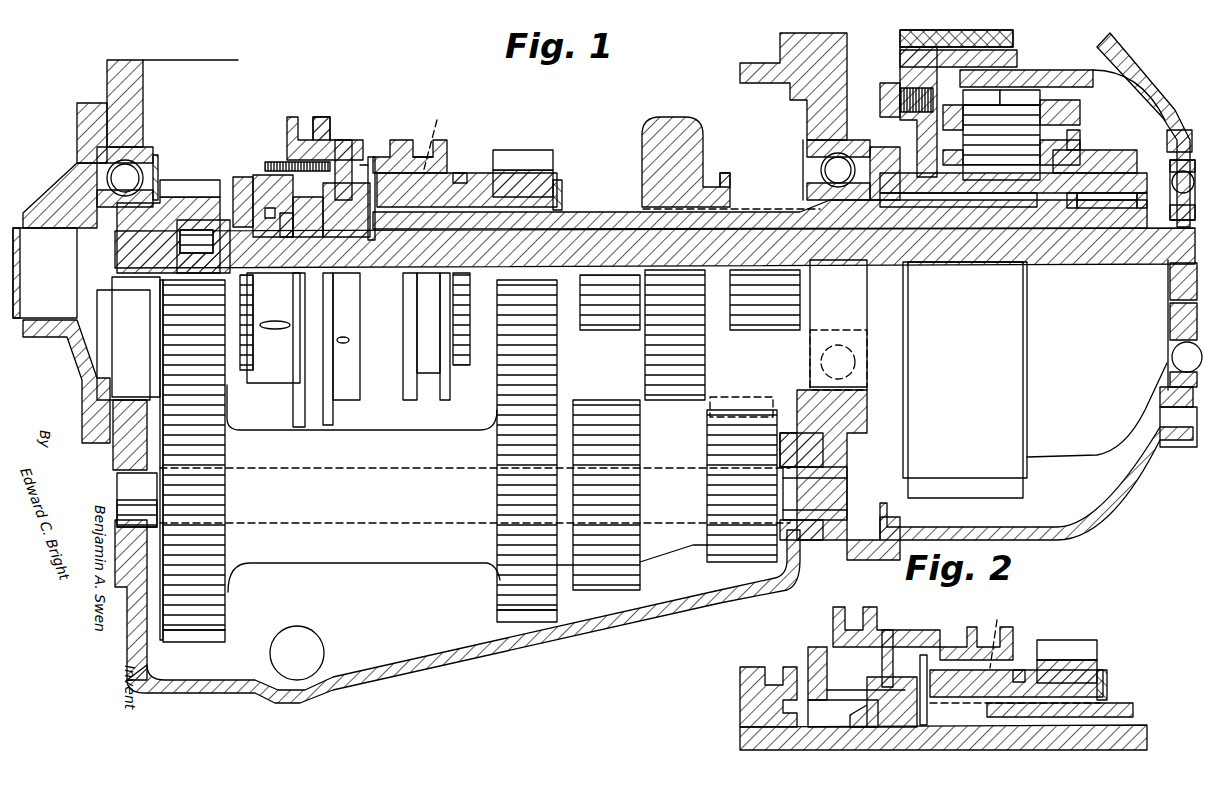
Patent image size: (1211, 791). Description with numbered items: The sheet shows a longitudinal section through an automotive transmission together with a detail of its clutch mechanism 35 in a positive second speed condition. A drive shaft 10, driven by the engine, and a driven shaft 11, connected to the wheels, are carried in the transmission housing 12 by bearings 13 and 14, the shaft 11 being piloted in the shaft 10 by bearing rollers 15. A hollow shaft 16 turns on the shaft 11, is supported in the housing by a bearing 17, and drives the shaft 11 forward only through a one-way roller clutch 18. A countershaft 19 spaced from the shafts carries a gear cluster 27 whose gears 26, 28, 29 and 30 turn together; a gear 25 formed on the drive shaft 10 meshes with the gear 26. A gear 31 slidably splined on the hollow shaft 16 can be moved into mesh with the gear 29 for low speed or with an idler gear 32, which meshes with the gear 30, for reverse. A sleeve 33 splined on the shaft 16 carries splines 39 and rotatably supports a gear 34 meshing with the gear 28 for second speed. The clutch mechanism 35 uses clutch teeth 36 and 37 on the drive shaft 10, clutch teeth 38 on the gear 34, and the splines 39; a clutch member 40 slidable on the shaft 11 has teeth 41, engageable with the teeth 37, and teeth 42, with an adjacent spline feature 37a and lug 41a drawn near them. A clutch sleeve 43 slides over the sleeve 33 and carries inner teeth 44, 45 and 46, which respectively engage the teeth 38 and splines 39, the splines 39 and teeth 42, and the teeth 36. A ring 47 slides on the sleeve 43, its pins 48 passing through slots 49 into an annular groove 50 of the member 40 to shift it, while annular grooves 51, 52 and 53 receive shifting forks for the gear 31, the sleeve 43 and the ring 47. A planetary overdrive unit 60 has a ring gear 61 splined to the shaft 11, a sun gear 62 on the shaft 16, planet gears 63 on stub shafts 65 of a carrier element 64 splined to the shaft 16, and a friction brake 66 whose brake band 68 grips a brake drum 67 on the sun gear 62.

In FIG. 1, the drive shaft 10 is at (62, 255).
In FIG. 2, the drive shaft 10 is at (745, 697).
In FIG. 1, the driven shaft 11 is at (1170, 275).
In FIG. 2, the driven shaft 11 is at (1147, 740).
In FIG. 1, the transmission housing 12 is at (143, 78).
In FIG. 1, the bearing 13 is at (150, 150).
In FIG. 1, the bearing 14 is at (1180, 130).
In FIG. 1, the bearing rollers 15 is at (205, 222).
In FIG. 1, the hollow shaft 16 is at (610, 220).
In FIG. 2, the hollow shaft 16 is at (1133, 710).
In FIG. 1, the bearing 17 is at (820, 170).
In FIG. 1, the one-way clutch 18 is at (1100, 210).
In FIG. 1, the countershaft 19 is at (825, 500).
In FIG. 1, the gear 25 is at (175, 200).
In FIG. 2, the gear 25 is at (758, 672).
In FIG. 1, the gear 26 is at (225, 603).
In FIG. 1, the gear cluster 27 is at (392, 575).
In FIG. 1, the gear 28 is at (525, 620).
In FIG. 1, the gear 29 is at (605, 588).
In FIG. 1, the gear 30 is at (728, 558).
In FIG. 1, the gear 31 is at (683, 120).
In FIG. 1, the idler gear 32 is at (760, 397).
In FIG. 1, the sleeve 33 is at (557, 197).
In FIG. 2, the sleeve 33 is at (1108, 688).
In FIG. 1, the gear 34 is at (550, 150).
In FIG. 2, the gear 34 is at (1080, 645).
In FIG. 1, the clutch mechanism 35 is at (343, 120).
In FIG. 2, the clutch mechanism 35 is at (952, 630).
In FIG. 1, the clutch teeth 36 is at (238, 177).
In FIG. 1, the clutch teeth 37 is at (250, 260).
In FIG. 1, the spline 37a is at (267, 322).
In FIG. 1, the clutch teeth 38 is at (495, 152).
In FIG. 1, the splines 39 is at (390, 177).
In FIG. 2, the splines 39 is at (958, 697).
In FIG. 1, the clutch member 40 is at (340, 240).
In FIG. 2, the clutch member 40 is at (893, 727).
In FIG. 1, the clutch teeth 41 is at (306, 212).
In FIG. 1, the lug 41a is at (270, 208).
In FIG. 1, the clutch teeth 42 is at (390, 150).
In FIG. 2, the clutch teeth 42 is at (913, 647).
In FIG. 1, the clutch sleeve 43 is at (467, 173).
In FIG. 2, the clutch sleeve 43 is at (1020, 670).
In FIG. 1, the clutch teeth 44 is at (450, 122).
In FIG. 2, the clutch teeth 44 is at (1010, 619).
In FIG. 1, the clutch teeth 45 is at (370, 157).
In FIG. 2, the clutch teeth 45 is at (925, 655).
In FIG. 1, the clutch teeth 46 is at (258, 175).
In FIG. 1, the ring 47 is at (290, 122).
In FIG. 1, the pins 48 is at (340, 140).
In FIG. 1, the slots 49 is at (277, 162).
In FIG. 1, the annular groove 50 is at (327, 200).
In FIG. 1, the annular groove 51 is at (717, 170).
In FIG. 1, the annular groove 52 is at (447, 150).
In FIG. 1, the annular groove 53 is at (315, 117).
In FIG. 1, the planetary overdrive unit 60 is at (1108, 55).
In FIG. 1, the ring gear 61 is at (1045, 92).
In FIG. 1, the sun gear 62 is at (1003, 195).
In FIG. 1, the planet gears 63 is at (960, 110).
In FIG. 1, the planet gear carrier element 64 is at (1105, 150).
In FIG. 1, the stub shafts 65 is at (1078, 115).
In FIG. 1, the friction brake 66 is at (1015, 42).
In FIG. 1, the brake drum 67 is at (905, 72).
In FIG. 1, the brake band 68 is at (900, 55).